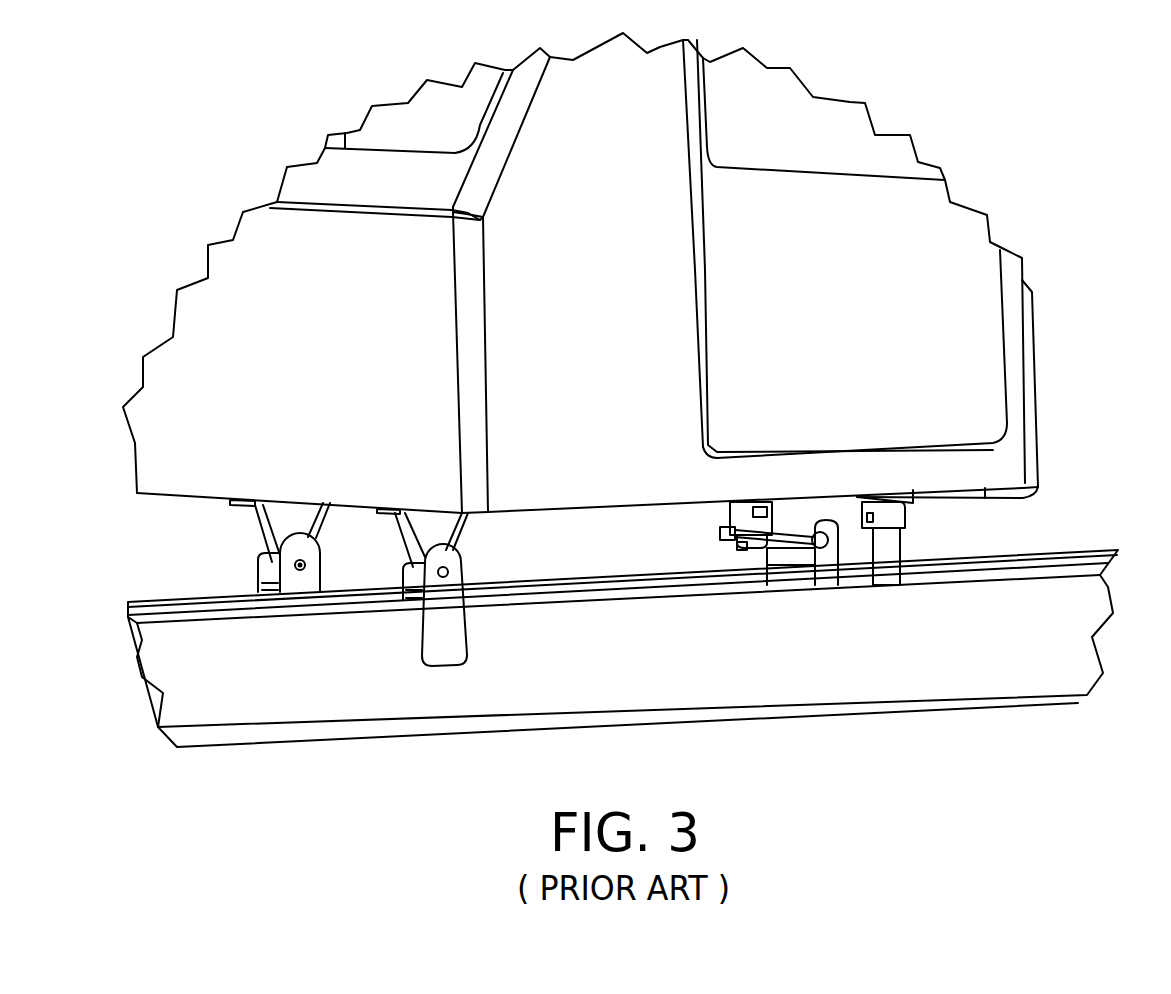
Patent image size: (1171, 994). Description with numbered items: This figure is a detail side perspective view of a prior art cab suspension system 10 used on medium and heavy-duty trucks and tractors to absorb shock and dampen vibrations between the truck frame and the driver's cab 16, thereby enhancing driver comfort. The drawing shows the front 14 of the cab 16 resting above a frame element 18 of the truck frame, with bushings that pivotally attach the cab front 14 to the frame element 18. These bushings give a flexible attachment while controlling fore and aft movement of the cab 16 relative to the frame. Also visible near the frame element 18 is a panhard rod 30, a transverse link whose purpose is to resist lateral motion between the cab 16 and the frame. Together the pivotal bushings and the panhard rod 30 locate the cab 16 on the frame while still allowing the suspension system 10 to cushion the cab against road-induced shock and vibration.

The cab suspension system 10 is at (612, 349).
The front 14 is at (160, 458).
The cab 16 is at (222, 337).
The frame element 18 is at (157, 660).
The panhard rod 30 is at (777, 497).